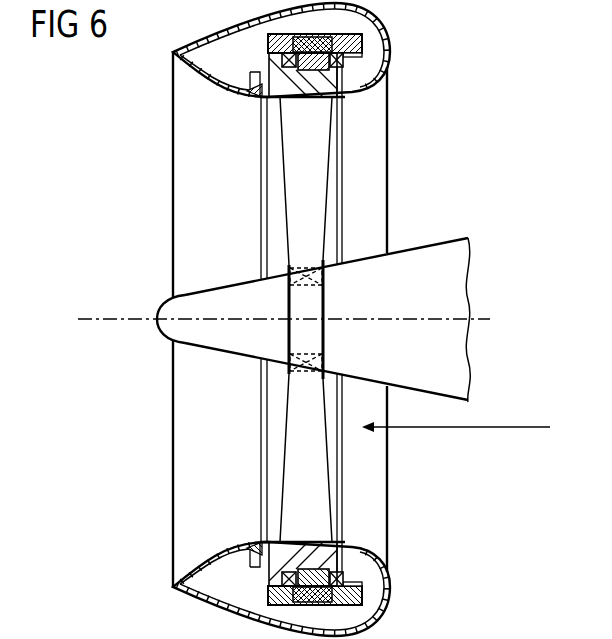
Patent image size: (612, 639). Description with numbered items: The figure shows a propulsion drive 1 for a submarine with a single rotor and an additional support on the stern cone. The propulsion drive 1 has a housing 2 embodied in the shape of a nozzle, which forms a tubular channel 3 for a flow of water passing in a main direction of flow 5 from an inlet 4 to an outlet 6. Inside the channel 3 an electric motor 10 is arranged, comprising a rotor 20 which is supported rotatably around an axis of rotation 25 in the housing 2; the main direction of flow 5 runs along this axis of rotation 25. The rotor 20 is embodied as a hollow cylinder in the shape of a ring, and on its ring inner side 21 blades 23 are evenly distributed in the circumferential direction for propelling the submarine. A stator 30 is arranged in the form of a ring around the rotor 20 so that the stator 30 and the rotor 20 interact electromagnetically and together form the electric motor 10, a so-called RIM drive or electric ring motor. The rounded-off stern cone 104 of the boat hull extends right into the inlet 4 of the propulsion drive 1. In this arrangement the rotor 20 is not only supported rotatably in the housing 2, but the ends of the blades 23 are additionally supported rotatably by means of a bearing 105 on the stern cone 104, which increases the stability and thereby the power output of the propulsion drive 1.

The propulsion drive 1 is at (469, 72).
The housing 2 is at (386, 47).
The channel 3 is at (185, 200).
The inlet 4 is at (361, 180).
The main direction of flow 5 is at (502, 427).
The outlet 6 is at (186, 428).
The electric motor 10 is at (333, 470).
The rotor 20 is at (344, 83).
The ring inner side 21 is at (310, 101).
The blades 23 is at (303, 147).
The axis of rotation 25 is at (102, 319).
The stator 30 is at (357, 595).
The stern cone 104 is at (435, 280).
The bearing 105 is at (300, 282).